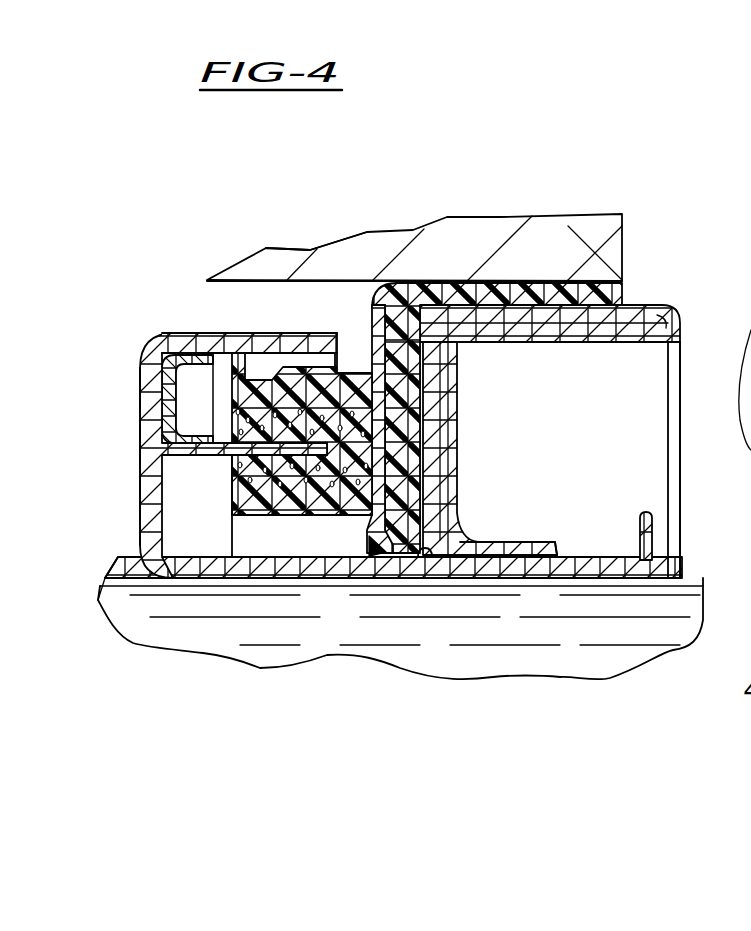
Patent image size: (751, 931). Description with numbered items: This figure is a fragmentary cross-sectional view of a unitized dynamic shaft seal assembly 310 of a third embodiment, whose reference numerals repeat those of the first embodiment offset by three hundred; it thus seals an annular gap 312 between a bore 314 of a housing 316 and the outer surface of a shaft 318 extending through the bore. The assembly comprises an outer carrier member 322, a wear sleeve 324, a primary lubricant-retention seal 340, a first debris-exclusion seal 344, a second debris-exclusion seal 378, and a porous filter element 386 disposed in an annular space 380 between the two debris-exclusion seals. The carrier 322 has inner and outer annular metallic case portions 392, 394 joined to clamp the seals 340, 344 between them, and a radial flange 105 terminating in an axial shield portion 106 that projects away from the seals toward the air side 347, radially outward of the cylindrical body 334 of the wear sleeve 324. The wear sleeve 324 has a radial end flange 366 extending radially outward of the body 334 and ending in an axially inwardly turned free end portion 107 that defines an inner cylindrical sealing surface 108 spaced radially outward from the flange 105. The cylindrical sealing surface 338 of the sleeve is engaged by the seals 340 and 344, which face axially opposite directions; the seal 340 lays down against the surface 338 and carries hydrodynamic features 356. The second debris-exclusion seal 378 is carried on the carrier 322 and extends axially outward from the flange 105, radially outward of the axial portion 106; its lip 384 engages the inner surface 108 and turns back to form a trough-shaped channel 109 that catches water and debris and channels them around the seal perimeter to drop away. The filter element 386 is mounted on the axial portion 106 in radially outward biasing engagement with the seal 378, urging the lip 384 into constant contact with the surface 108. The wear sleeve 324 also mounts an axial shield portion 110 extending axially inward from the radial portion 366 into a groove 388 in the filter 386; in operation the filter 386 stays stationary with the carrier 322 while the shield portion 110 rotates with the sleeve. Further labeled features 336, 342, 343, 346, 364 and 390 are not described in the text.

The shaft seal assembly 310 is at (397, 430).
The annular gap 312 is at (258, 298).
The bore 314 is at (334, 293).
The housing 316 is at (458, 245).
The shaft 318 is at (218, 653).
The outer carrier member 322 is at (675, 298).
The wear sleeve 324 is at (143, 560).
The cylindrical body 334 is at (295, 568).
The shaft surface 336 is at (223, 580).
The cylindrical sealing surface 338 is at (418, 553).
The primary lubricant-retention seal 340 is at (433, 522).
The sealing lip 342 is at (392, 553).
The outer case flange surface 343 is at (727, 566).
The first debris-exclusion seal 344 is at (410, 477).
The case foot 346 is at (525, 547).
The air side 347 is at (110, 533).
The hydrodynamic features 356 is at (548, 556).
The inner case wall 364 is at (140, 482).
The radial end flange 366 is at (147, 403).
The second debris-exclusion seal 378 is at (343, 381).
The annular space 380 is at (113, 588).
The lip 384 is at (203, 390).
The porous filter element 386 is at (237, 465).
The groove 388 is at (240, 457).
The retaining tab 390 is at (647, 514).
The inner annular metallic case portion 392 is at (617, 333).
The outer annular metallic case portion 394 is at (624, 318).
The radial flange 105 is at (392, 408).
The axial shield portion 106 is at (233, 506).
The axially inwardly turned free end portion 107 is at (235, 368).
The inner cylindrical sealing surface 108 is at (213, 345).
The trough-shaped channel 109 is at (297, 372).
The axial shield portion 110 is at (287, 457).